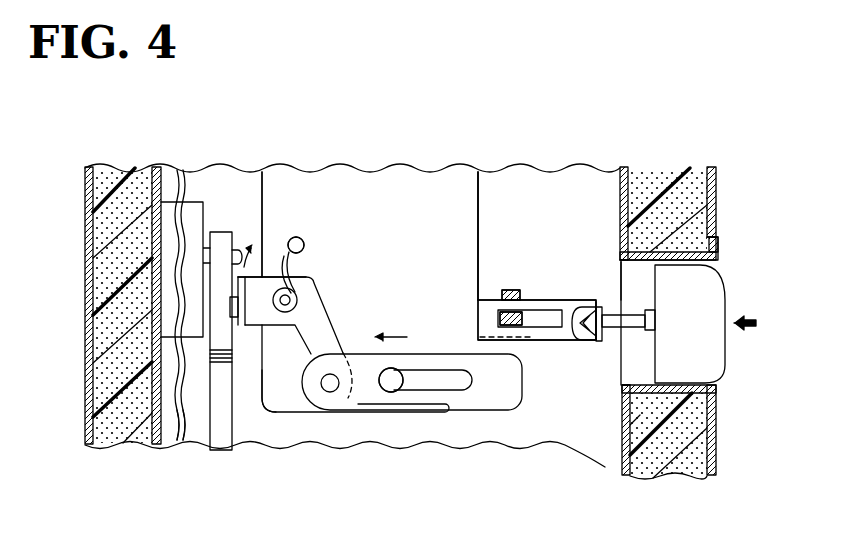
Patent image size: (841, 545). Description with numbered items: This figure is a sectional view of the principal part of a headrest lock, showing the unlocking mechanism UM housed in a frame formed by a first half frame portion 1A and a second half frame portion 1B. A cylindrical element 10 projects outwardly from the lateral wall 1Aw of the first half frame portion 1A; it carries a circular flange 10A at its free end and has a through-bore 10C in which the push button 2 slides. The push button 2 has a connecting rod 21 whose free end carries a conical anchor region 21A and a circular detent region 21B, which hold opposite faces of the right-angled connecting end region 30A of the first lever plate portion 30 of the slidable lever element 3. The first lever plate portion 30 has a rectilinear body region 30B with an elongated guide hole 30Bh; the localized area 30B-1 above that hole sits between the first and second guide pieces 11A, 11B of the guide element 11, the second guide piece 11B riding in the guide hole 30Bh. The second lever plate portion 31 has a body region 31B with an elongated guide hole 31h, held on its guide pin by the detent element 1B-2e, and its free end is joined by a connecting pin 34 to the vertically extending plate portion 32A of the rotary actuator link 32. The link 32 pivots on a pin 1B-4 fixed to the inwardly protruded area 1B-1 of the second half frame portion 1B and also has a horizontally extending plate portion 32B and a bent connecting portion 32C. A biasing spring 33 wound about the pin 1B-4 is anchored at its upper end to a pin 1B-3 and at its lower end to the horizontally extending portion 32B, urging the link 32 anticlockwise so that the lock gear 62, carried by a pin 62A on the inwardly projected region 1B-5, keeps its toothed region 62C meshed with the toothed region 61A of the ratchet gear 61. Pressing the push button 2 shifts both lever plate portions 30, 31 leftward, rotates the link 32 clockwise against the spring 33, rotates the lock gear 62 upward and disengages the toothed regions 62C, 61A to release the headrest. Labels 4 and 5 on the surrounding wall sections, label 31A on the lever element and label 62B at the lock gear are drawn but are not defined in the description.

The first half frame portion 1A is at (401, 309).
The lateral wall 1Aw is at (611, 173).
The second half frame portion 1B is at (251, 170).
The inwardly protruded area 1B-1 is at (452, 195).
The detent element 1B-2e is at (430, 414).
The pin 1B-3 is at (280, 283).
The pin 1B-4 is at (306, 250).
The inwardly projected region 1B-5 is at (172, 167).
The push button 2 is at (727, 308).
The slidable lever element 3 is at (505, 189).
The wall insulation 4 is at (684, 192).
The wall panel 5 is at (717, 180).
The cylindrical element 10 is at (619, 262).
The circular flange 10A is at (718, 240).
The through-bore 10C is at (621, 375).
The guide element 11 is at (506, 289).
The first guide piece 11A is at (513, 296).
The second guide piece 11B is at (517, 310).
The connecting rod 21 is at (637, 327).
The conical anchor region 21A is at (581, 341).
The circular detent region 21B is at (601, 338).
The first lever plate portion 30 is at (486, 298).
The right-angled connecting end region 30A is at (598, 306).
The body region 30B is at (520, 341).
The localized area 30B-1 is at (482, 290).
The elongated guide hole 30Bh is at (538, 320).
The second lever plate portion 31 is at (427, 350).
The link first end 31A is at (478, 330).
The body region 31B is at (352, 353).
The elongated guide hole 31h is at (440, 390).
The rotary actuator link 32 is at (332, 318).
The vertically extending plate portion 32A is at (397, 390).
The horizontally extending plate portion 32B is at (305, 237).
The bent connecting portion 32C is at (270, 405).
The biasing spring 33 is at (298, 290).
The connecting pin 34 is at (337, 390).
The ratchet gear 61 is at (233, 397).
The toothed region 61A is at (209, 362).
The lock gear 62 is at (219, 232).
The pin 62A is at (241, 247).
The latch plate tab 62B is at (270, 282).
The toothed region 62C is at (211, 353).
The unlocking mechanism UM is at (708, 93).